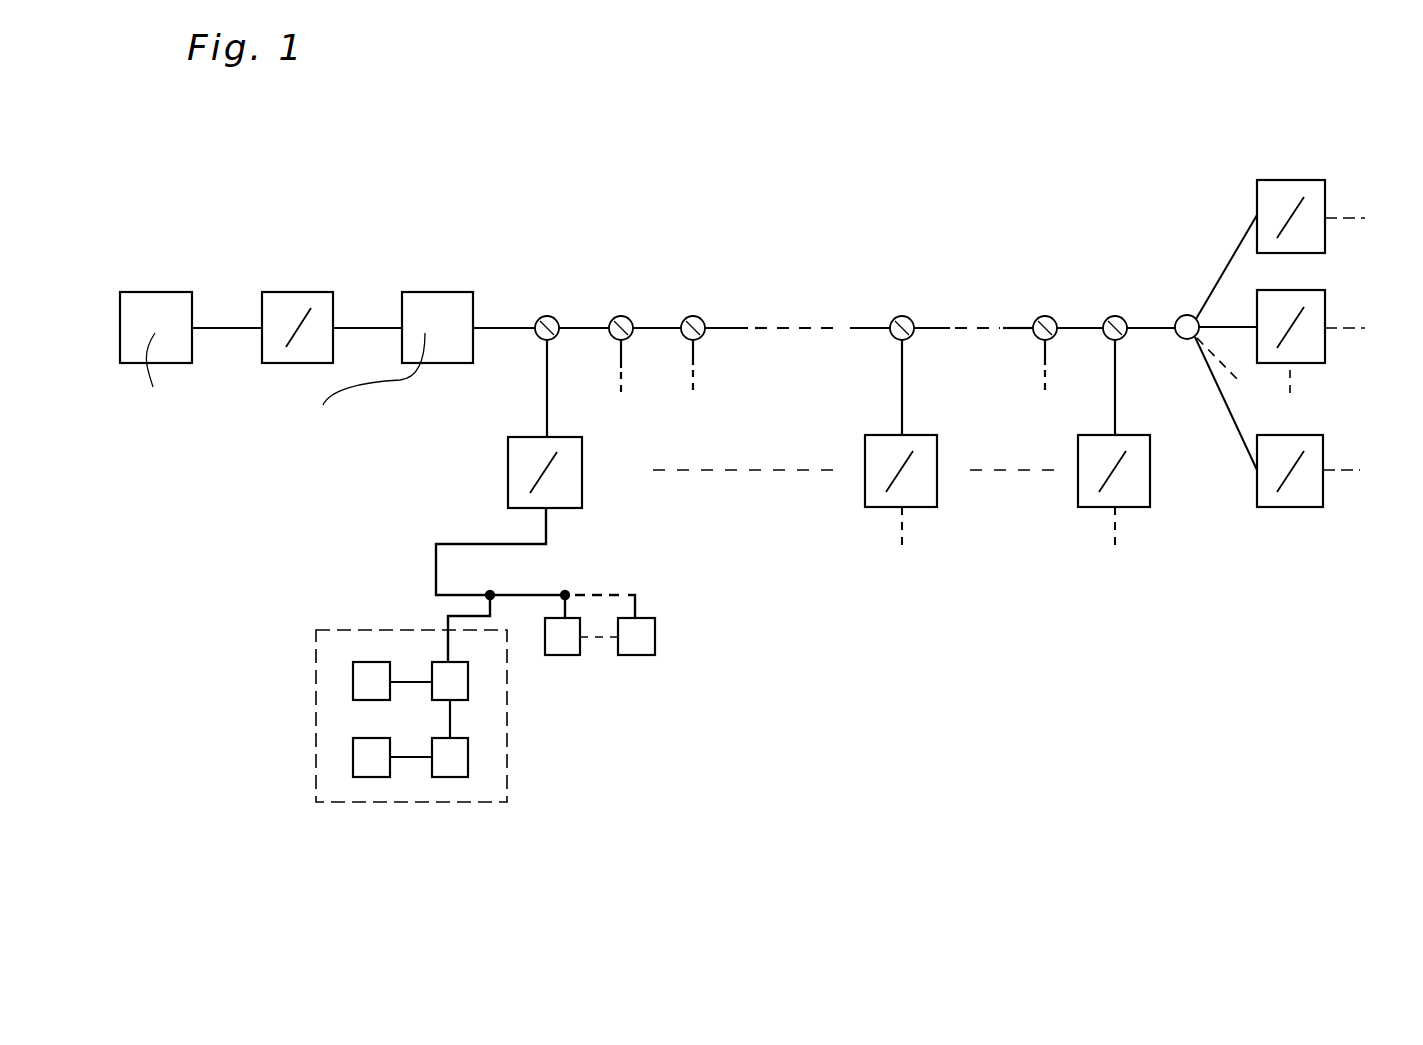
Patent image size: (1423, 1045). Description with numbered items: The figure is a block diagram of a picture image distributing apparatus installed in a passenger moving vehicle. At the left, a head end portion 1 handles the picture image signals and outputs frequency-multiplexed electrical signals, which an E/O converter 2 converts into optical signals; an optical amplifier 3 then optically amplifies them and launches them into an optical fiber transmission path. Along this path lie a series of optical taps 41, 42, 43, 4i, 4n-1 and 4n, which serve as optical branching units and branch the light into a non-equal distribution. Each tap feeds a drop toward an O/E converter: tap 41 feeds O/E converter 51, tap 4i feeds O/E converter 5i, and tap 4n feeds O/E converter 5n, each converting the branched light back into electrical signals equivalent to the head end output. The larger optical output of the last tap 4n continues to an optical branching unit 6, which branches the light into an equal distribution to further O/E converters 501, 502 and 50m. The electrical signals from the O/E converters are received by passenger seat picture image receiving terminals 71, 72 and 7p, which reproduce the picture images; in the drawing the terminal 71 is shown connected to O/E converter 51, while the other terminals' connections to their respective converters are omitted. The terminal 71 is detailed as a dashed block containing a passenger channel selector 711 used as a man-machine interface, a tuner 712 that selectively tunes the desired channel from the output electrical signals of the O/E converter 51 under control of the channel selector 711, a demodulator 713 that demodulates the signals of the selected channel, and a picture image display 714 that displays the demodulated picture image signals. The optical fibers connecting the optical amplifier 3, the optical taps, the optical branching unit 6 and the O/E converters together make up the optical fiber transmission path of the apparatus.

The head end portion 1 is at (172, 290).
The E/O converter 2 is at (308, 290).
The optical amplifier 3 is at (453, 290).
The optical tap 41 is at (555, 318).
The optical tap 42 is at (630, 318).
The optical tap 43 is at (705, 318).
The optical tap 4i is at (910, 318).
The optical tap 4n-1 is at (1053, 317).
The optical tap 4n is at (1123, 317).
The O/E converter 51 is at (582, 497).
The O/E converter 5i is at (920, 510).
The O/E converter 5n is at (1135, 510).
The O/E converter 501 is at (1313, 180).
The O/E converter 502 is at (1325, 308).
The O/E converter 50m is at (1300, 510).
The optical branching unit 6 is at (1182, 338).
The passenger seat picture image receiving terminal 71 is at (413, 717).
The passenger channel selector 711 is at (353, 683).
The tuner 712 is at (468, 683).
The demodulator 713 is at (457, 777).
The picture image display 714 is at (372, 777).
The passenger seat picture image receiving terminal 72 is at (563, 655).
The passenger seat picture image receiving terminal 7p is at (633, 655).